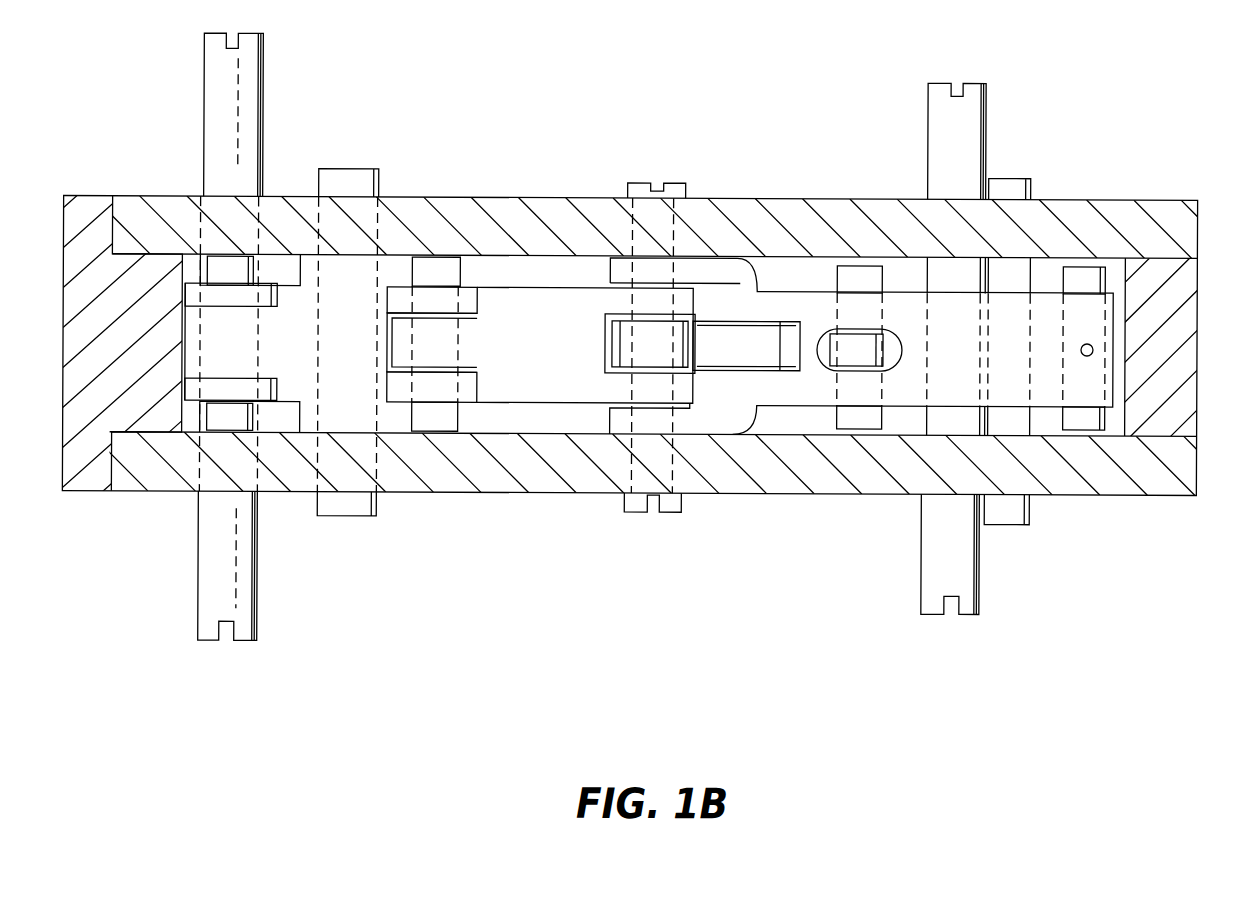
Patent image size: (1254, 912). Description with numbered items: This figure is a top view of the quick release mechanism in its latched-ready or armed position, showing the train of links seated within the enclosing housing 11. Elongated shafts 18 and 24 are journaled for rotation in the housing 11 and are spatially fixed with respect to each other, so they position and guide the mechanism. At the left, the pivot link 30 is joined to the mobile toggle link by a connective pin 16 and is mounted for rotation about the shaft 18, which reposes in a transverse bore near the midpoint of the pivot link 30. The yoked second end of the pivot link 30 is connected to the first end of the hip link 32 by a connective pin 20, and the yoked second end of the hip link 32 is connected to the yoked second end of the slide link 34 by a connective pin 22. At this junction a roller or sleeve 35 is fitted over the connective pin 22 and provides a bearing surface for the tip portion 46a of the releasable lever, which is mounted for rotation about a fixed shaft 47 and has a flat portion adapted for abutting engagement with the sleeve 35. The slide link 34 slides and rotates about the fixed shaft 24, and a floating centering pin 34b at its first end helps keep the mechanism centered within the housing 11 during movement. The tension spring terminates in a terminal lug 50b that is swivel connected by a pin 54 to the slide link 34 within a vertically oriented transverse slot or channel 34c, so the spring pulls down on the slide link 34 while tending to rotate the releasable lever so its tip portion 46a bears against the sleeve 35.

The housing 11 is at (1168, 495).
The connective pin 16 is at (242, 417).
The elongated shaft 18 is at (335, 517).
The connective pin 20 is at (445, 423).
The connective pin 22 is at (667, 412).
The elongated shaft 24 is at (1008, 523).
The pivot link 30 is at (307, 350).
The hip link 32 is at (550, 367).
The slide link 34 is at (963, 325).
The floating centering pin 34b is at (1082, 265).
The transverse slot 34c is at (885, 357).
The sleeve 35 is at (640, 340).
The tip portion 46a is at (770, 357).
The fixed shaft 47 is at (635, 183).
The terminal lug 50b is at (880, 351).
The pin 54 is at (862, 265).